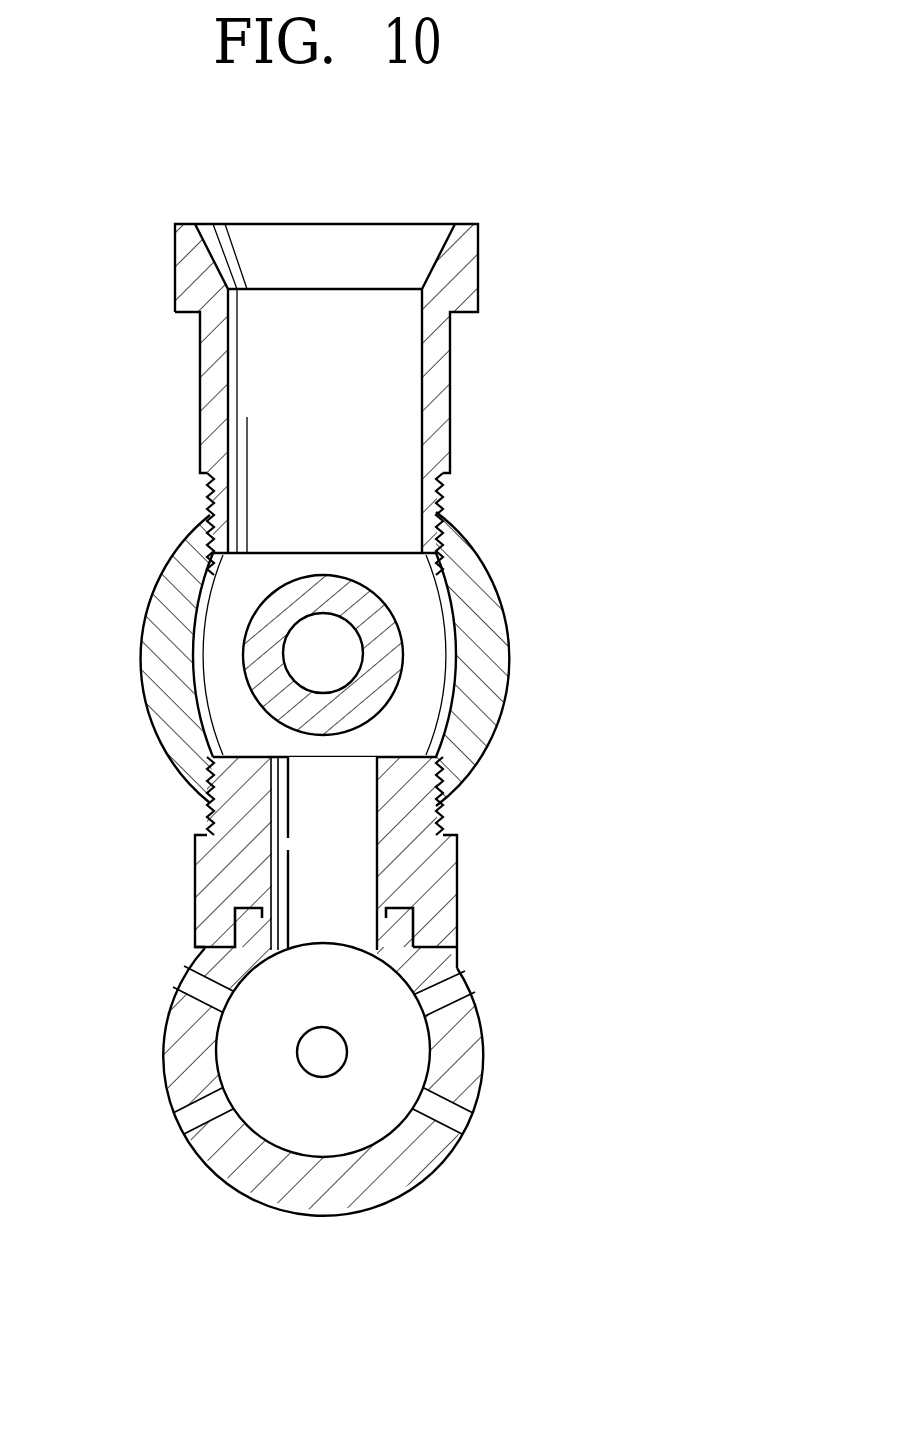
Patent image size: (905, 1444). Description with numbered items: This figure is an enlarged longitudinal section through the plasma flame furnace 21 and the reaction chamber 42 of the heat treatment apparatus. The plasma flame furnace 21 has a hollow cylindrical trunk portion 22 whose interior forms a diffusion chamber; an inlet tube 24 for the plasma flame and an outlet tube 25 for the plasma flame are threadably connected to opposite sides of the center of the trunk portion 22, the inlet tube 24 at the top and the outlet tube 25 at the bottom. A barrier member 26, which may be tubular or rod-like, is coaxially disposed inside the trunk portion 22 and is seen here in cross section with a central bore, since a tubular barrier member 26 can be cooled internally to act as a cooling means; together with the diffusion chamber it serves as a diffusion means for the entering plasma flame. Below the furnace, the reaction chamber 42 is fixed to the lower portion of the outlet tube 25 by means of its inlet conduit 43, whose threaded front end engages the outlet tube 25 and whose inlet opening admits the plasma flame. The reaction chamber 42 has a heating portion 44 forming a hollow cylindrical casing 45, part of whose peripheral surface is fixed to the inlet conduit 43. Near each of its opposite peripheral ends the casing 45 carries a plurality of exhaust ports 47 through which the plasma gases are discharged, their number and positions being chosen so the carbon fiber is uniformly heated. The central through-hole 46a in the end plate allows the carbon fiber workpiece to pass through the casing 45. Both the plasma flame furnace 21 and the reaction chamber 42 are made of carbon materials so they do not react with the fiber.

The plasma flame furnace 21 is at (577, 436).
The trunk portion 22 is at (497, 612).
The inlet tube 24 is at (483, 289).
The outlet tube 25 is at (462, 846).
The barrier member 26 is at (260, 634).
The reaction chamber 42 is at (580, 1031).
The inlet conduit 43 is at (415, 930).
The heating portion 44 is at (433, 1175).
The cylindrical casing 45 is at (362, 1187).
The through-hole 46a is at (318, 1062).
The exhaust ports 47 is at (198, 978).